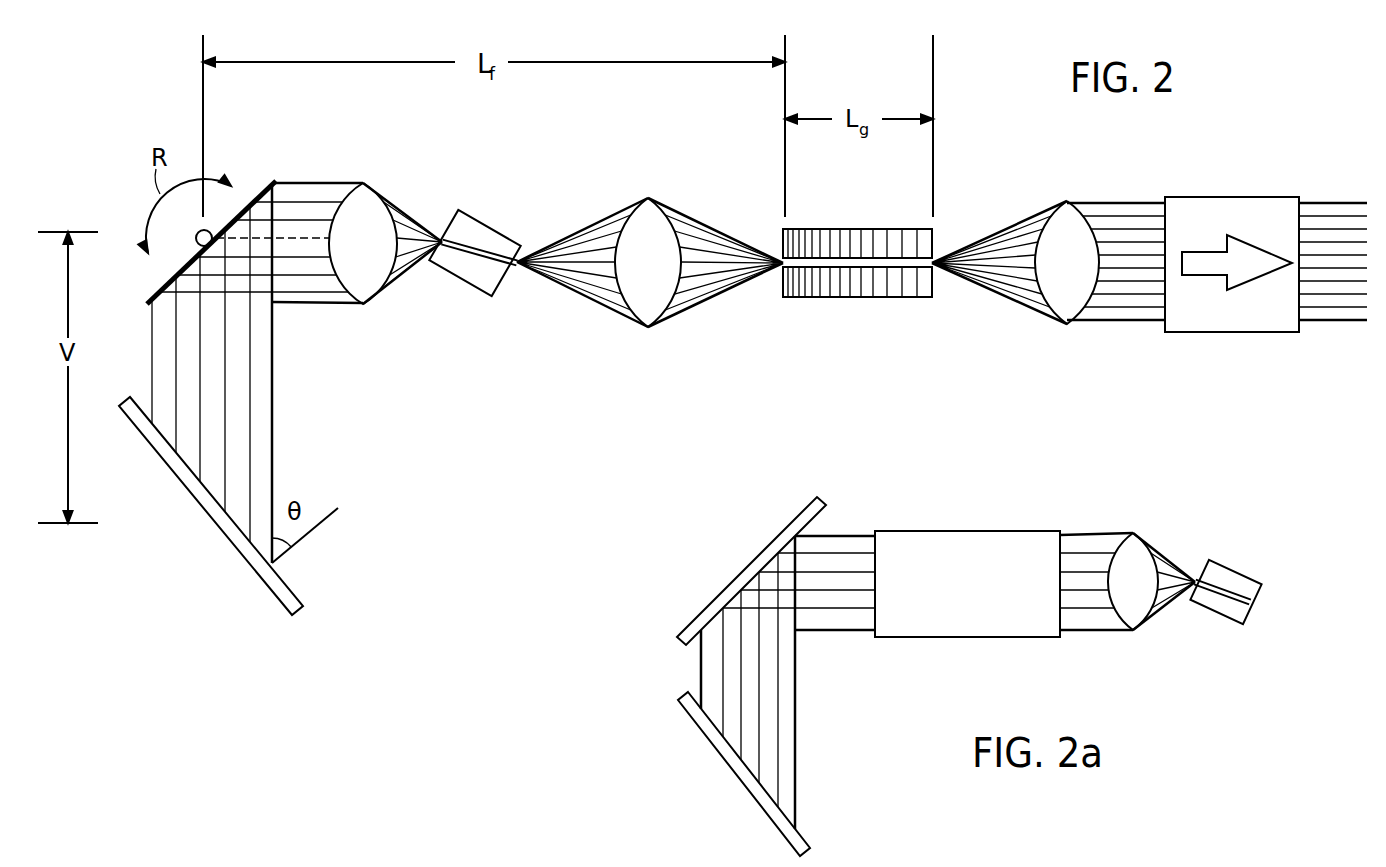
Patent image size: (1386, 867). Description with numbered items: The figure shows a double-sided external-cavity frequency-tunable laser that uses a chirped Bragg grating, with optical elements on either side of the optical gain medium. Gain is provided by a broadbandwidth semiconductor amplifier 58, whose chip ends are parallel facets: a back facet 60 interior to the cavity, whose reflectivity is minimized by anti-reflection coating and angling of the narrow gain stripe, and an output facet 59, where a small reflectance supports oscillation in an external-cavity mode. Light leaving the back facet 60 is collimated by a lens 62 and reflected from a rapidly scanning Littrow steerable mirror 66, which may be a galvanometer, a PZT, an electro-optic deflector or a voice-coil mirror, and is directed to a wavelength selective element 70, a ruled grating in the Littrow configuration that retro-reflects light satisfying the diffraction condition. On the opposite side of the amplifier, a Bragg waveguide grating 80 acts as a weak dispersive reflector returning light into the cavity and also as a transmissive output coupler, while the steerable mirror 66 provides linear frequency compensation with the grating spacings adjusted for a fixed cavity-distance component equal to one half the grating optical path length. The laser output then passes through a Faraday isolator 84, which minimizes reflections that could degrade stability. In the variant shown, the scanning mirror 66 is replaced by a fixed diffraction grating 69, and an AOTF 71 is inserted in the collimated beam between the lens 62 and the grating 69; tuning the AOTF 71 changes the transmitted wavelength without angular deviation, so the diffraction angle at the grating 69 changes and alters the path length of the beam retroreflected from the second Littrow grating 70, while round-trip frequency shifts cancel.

In FIG. 2, the broadbandwidth semiconductor amplifier 58 is at (488, 225).
In FIG. 2a, the broadbandwidth semiconductor amplifier 58 is at (1235, 568).
In FIG. 2, the output facet 59 is at (516, 272).
In FIG. 2, the back facet 60 is at (441, 236).
In FIG. 2, the lens 62 is at (371, 191).
In FIG. 2a, the lens 62 is at (1148, 542).
In FIG. 2, the steerable mirror 66 is at (282, 175).
In FIG. 2a, the fixed diffraction grating 69 is at (742, 572).
In FIG. 2, the wavelength selective element 70 is at (228, 533).
In FIG. 2a, the wavelength selective element 70 is at (738, 778).
In FIG. 2a, the AOTF 71 is at (963, 640).
In FIG. 2, the Bragg waveguide grating 80 is at (932, 245).
In FIG. 2, the Faraday isolator 84 is at (1242, 197).